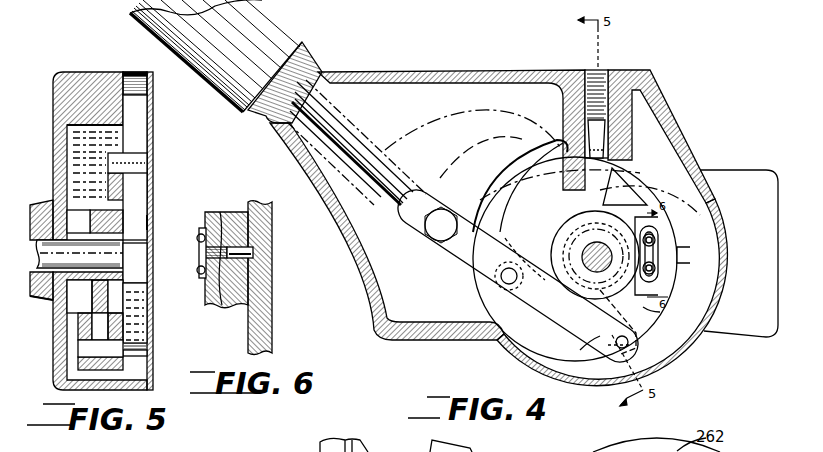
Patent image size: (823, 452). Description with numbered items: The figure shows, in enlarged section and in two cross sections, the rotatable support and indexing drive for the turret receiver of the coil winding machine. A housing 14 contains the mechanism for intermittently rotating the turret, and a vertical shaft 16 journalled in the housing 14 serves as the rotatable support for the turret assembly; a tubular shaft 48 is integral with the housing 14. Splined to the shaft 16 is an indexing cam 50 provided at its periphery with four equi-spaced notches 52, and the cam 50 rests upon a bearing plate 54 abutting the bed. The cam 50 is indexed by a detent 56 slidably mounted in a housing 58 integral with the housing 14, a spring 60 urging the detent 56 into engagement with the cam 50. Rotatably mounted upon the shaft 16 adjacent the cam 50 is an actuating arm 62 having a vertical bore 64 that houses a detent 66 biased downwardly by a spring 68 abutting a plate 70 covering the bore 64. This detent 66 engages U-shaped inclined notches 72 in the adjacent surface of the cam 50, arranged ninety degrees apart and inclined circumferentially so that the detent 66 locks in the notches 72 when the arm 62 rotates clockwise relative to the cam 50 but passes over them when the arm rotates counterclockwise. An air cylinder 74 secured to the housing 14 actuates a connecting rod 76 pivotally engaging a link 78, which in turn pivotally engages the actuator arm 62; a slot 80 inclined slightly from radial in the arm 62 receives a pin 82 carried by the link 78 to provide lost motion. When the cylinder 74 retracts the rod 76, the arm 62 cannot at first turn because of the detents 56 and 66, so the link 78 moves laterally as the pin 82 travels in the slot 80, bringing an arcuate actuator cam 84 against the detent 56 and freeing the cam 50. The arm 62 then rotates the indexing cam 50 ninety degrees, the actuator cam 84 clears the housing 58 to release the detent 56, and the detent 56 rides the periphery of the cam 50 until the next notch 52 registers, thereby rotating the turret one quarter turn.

In FIG. 5, the housing 14 is at (92, 72).
In FIG. 4, the housing 14 is at (392, 72).
In FIG. 5, the vertical shaft 16 is at (42, 207).
In FIG. 4, the vertical shaft 16 is at (600, 250).
In FIG. 5, the tubular shaft 48 is at (38, 300).
In FIG. 5, the indexing cam 50 is at (140, 306).
In FIG. 4, the indexing cam 50 is at (646, 180).
In FIG. 5, the notches 52 is at (138, 250).
In FIG. 4, the notches 52 is at (603, 162).
In FIG. 5, the bearing plate 54 is at (152, 224).
In FIG. 5, the detent 56 is at (138, 165).
In FIG. 4, the detent 56 is at (600, 132).
In FIG. 5, the housing 58 is at (60, 126).
In FIG. 4, the housing 58 is at (568, 106).
In FIG. 5, the spring 60 is at (148, 89).
In FIG. 4, the spring 60 is at (625, 72).
In FIG. 5, the actuating arm 62 is at (105, 296).
In FIG. 4, the actuating arm 62 is at (660, 318).
In FIG. 6, the vertical bore 64 is at (221, 213).
In FIG. 6, the detent 66 is at (252, 253).
In FIG. 6, the spring 68 is at (222, 305).
In FIG. 6, the plate 70 is at (200, 255).
In FIG. 4, the plate 70 is at (656, 245).
In FIG. 6, the U-shaped inclined notches 72 is at (252, 237).
In FIG. 4, the U-shaped inclined notches 72 is at (600, 212).
In FIG. 4, the air cylinder 74 is at (275, 30).
In FIG. 4, the connecting rod 76 is at (353, 148).
In FIG. 5, the link 78 is at (118, 363).
In FIG. 4, the link 78 is at (462, 270).
In FIG. 5, the slot 80 is at (100, 328).
In FIG. 4, the slot 80 is at (632, 343).
In FIG. 5, the pin 82 is at (88, 352).
In FIG. 4, the pin 82 is at (622, 355).
In FIG. 5, the arcuate actuator cam 84 is at (120, 186).
In FIG. 4, the arcuate actuator cam 84 is at (467, 123).